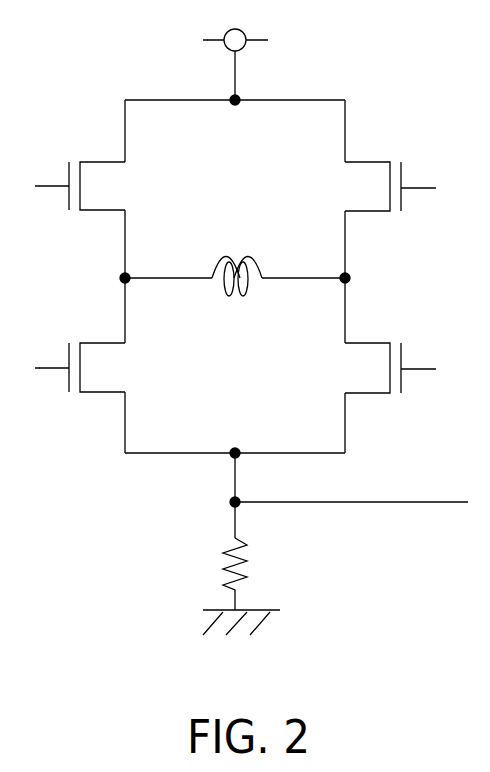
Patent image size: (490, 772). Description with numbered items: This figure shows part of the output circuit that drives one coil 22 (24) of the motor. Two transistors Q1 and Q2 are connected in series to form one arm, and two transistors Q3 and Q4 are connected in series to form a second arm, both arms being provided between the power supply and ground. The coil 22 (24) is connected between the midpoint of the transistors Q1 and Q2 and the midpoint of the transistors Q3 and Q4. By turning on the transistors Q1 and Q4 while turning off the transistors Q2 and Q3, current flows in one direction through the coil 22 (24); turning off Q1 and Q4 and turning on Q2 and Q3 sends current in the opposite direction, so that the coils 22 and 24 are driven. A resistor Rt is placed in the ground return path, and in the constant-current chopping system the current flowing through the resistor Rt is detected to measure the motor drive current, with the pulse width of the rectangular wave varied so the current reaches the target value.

The transistor Q1 is at (80, 163).
The transistor Q2 is at (80, 346).
The transistor Q3 is at (390, 165).
The transistor Q4 is at (390, 347).
The coil 22 is at (244, 255).
The coil 24 is at (237, 277).
The resistor Rt is at (259, 574).